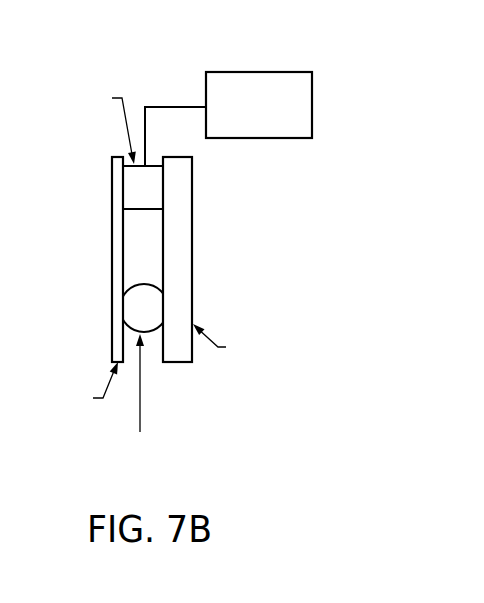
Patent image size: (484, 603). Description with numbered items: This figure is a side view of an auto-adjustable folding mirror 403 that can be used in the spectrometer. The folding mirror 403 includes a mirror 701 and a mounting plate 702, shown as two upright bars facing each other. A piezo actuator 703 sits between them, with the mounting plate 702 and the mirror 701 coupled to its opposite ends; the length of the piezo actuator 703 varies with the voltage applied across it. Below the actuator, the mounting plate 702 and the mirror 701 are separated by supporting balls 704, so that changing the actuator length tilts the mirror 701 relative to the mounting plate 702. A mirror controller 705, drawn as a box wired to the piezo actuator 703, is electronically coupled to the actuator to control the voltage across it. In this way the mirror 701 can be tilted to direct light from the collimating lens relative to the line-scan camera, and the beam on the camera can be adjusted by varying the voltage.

The folding mirror 403 is at (133, 52).
The mirror 701 is at (116, 156).
The mounting plate 702 is at (194, 187).
The piezo actuator 703 is at (143, 210).
The supporting balls 704 is at (149, 334).
The mirror controller 705 is at (253, 72).